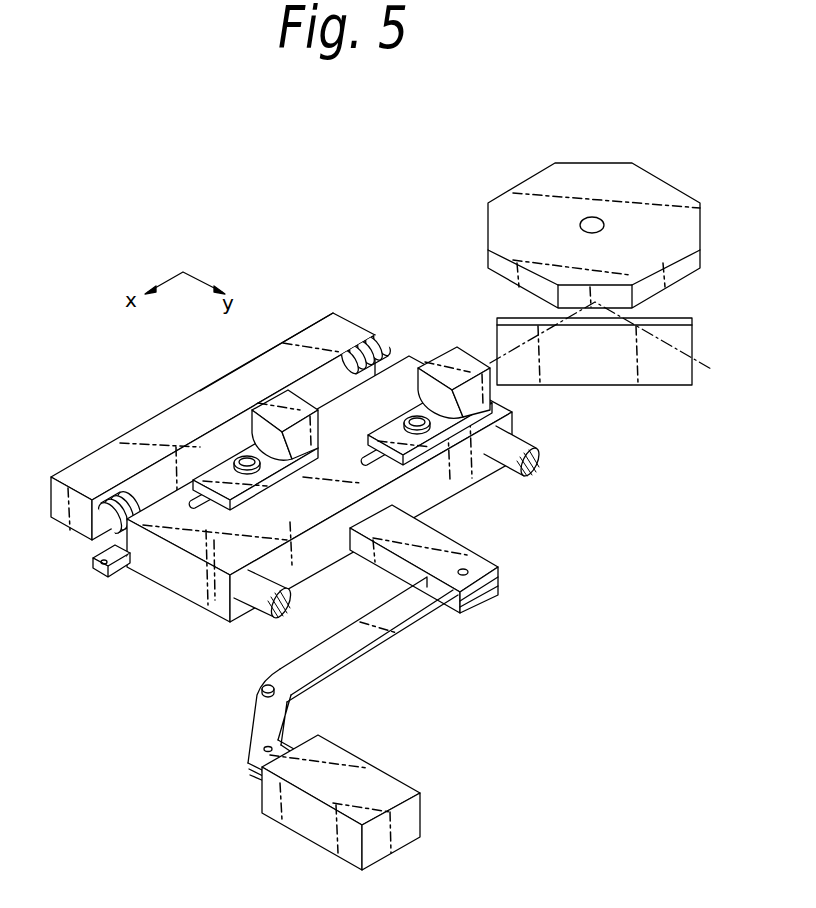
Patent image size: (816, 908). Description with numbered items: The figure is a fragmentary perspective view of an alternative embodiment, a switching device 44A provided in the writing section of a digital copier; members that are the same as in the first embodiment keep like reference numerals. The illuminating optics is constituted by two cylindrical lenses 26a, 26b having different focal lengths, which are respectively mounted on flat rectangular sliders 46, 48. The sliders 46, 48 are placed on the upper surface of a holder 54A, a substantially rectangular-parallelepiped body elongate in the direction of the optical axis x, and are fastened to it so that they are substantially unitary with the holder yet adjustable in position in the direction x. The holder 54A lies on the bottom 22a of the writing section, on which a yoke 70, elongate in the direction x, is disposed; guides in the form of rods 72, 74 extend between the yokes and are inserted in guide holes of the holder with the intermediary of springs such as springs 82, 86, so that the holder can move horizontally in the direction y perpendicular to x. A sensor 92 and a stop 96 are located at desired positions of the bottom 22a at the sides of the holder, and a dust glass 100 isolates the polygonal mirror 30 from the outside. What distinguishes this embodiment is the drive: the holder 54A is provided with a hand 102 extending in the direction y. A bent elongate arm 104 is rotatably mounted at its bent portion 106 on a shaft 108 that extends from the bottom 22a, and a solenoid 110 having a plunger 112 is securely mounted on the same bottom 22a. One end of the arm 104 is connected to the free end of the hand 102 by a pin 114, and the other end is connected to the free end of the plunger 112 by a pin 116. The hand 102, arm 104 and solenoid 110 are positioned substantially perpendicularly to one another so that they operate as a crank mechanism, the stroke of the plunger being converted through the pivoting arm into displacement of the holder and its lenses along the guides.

The switching device 44A is at (304, 524).
The polygonal mirror 30 is at (495, 222).
The dust glass 100 is at (612, 368).
The yoke 70 is at (67, 475).
The stop 96 is at (277, 340).
The spring 86 is at (353, 343).
The bottom of the writing section 22a is at (304, 518).
The holder 54A is at (163, 573).
The spring 82 is at (103, 503).
The sensor 92 is at (95, 573).
The slider 48 is at (218, 473).
The cylindrical lens 26b is at (240, 405).
The slider 46 is at (440, 427).
The cylindrical lens 26a is at (443, 350).
The guide rod 72 is at (270, 575).
The guide rod 74 is at (512, 450).
The hand 102 is at (457, 571).
The pin 114 is at (463, 575).
The bent elongate arm 104 is at (405, 618).
The bent portion 106 is at (257, 687).
The shaft 108 is at (270, 683).
The plunger 112 is at (258, 747).
The pin 116 is at (270, 747).
The solenoid 110 is at (377, 778).